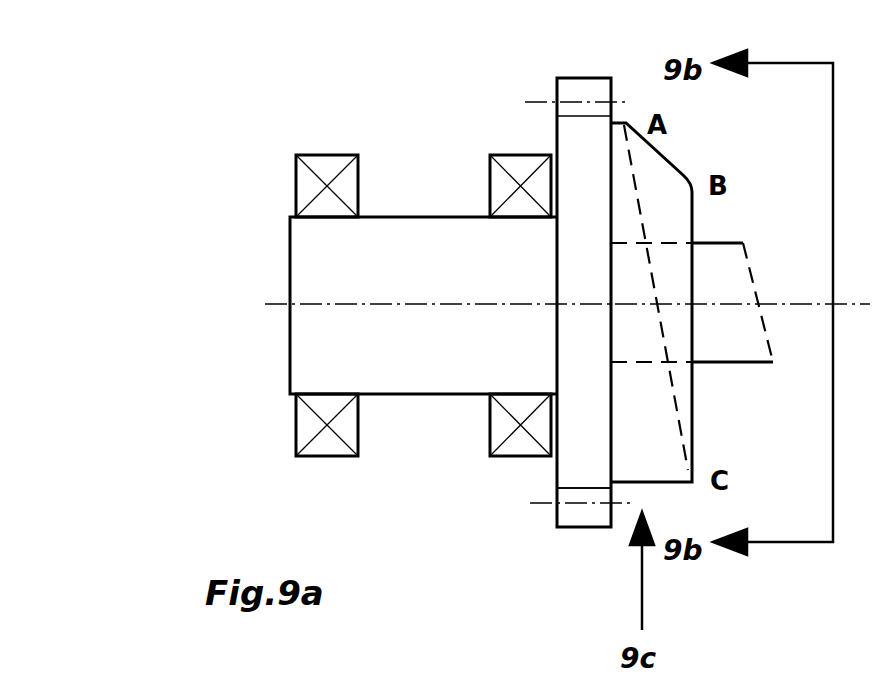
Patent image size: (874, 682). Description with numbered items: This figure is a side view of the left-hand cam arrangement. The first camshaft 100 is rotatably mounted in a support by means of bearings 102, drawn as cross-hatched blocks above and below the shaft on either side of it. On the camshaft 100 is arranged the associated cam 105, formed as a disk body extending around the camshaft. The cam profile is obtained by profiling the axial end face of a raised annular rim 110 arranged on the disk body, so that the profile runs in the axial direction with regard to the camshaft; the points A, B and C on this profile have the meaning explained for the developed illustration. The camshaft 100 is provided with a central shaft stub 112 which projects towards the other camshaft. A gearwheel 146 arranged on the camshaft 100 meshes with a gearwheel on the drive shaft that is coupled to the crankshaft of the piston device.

The first camshaft 100 is at (370, 260).
The bearings 102 is at (515, 163).
The cam 105 is at (622, 168).
The raised annular rim 110 is at (658, 440).
The central shaft stub 112 is at (720, 322).
The gearwheel 146 is at (590, 503).